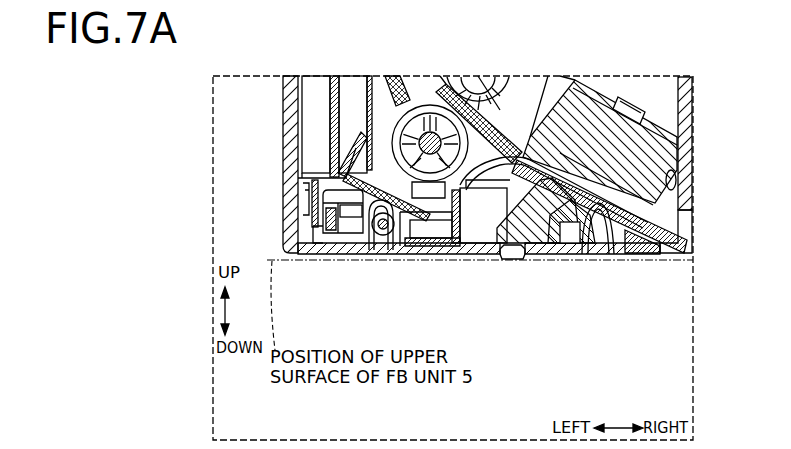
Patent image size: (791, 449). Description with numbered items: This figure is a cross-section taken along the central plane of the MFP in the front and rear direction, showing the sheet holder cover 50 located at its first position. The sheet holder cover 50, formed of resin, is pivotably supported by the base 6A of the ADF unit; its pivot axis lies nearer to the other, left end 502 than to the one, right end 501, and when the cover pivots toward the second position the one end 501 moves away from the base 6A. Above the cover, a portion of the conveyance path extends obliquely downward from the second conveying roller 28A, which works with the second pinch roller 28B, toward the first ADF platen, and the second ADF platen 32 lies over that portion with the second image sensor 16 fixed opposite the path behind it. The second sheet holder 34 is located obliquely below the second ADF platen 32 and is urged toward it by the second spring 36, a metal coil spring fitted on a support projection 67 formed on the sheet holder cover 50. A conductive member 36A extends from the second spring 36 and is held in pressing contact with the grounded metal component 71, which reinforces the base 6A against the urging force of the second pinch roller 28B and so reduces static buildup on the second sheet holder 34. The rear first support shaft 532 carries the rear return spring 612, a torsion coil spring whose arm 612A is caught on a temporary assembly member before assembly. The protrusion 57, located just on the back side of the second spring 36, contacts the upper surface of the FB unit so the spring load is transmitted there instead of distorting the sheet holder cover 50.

The base 6A is at (290, 200).
The second image sensor 16 is at (660, 143).
The second conveying roller 28A is at (497, 92).
The second pinch roller 28B is at (392, 98).
The second ADF platen 32 is at (660, 225).
The second sheet holder 34 is at (622, 256).
The second spring 36 is at (560, 237).
The conductive member 36A is at (380, 205).
The sheet holder cover 50 is at (481, 258).
The protrusion 57 is at (520, 259).
The support projection 67 is at (548, 210).
The metal component 71 is at (356, 158).
The one end 501 is at (607, 205).
The other end 502 is at (318, 247).
The first support shaft 532 is at (396, 240).
The return spring 612 is at (418, 235).
The arm 612A is at (333, 230).